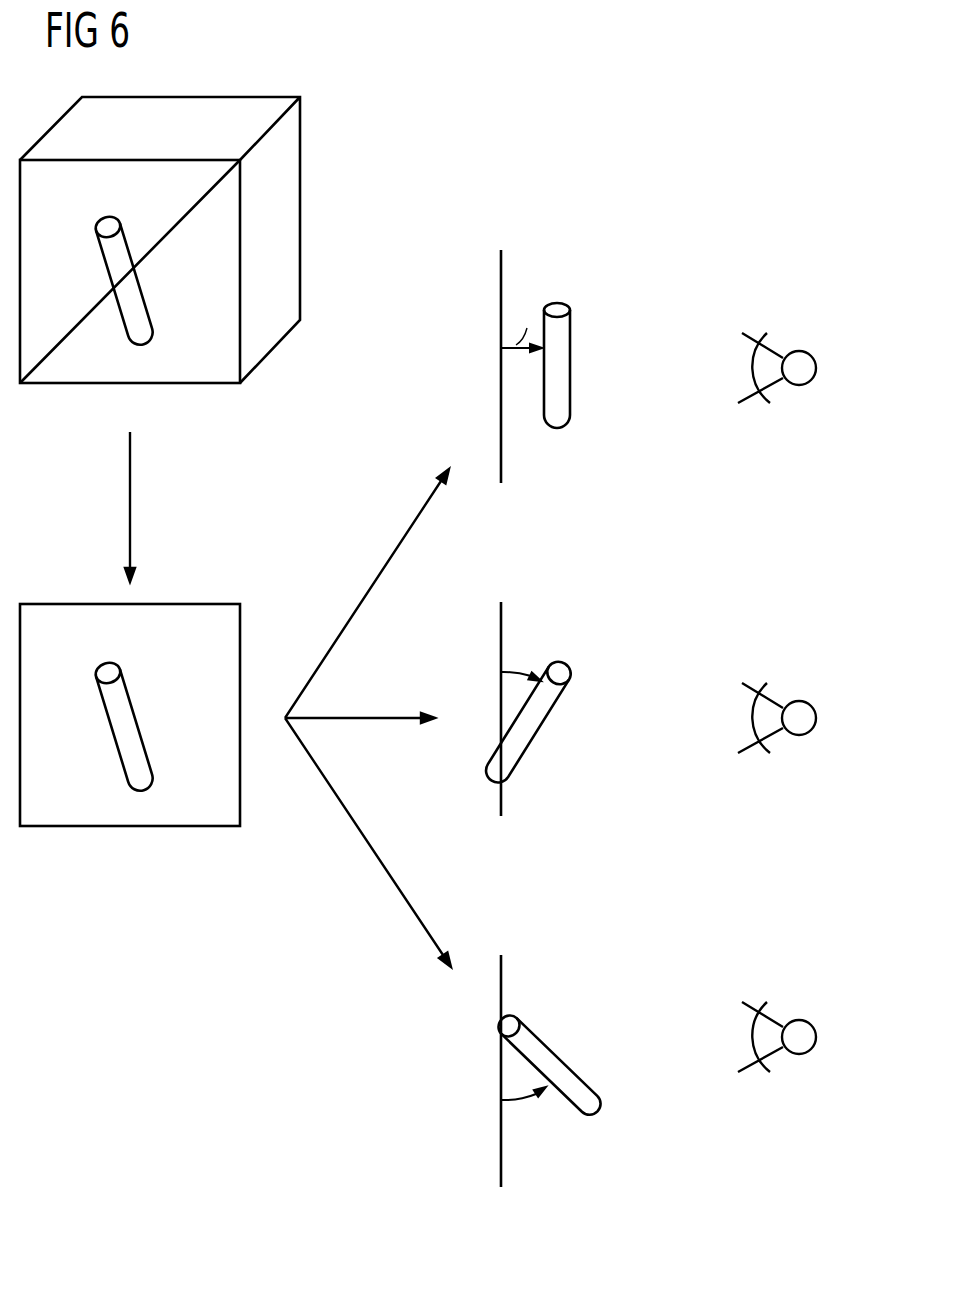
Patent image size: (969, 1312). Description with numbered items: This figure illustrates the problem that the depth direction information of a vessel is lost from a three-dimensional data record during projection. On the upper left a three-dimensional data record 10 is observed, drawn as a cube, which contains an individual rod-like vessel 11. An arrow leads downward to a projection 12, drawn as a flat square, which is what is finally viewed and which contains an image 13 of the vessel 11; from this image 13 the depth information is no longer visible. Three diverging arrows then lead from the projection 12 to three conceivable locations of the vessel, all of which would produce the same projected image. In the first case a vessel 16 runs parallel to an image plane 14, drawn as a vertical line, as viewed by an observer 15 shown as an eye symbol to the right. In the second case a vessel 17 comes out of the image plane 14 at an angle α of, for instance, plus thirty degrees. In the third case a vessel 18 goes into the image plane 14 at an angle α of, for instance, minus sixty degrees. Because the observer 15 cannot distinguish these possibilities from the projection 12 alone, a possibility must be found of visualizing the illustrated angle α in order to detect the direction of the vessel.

The 3D data record 10 is at (276, 238).
The rod-like vessel 11 is at (127, 310).
The projection 12 is at (190, 604).
The image of the vessel 13 is at (127, 735).
The image plane 14 is at (500, 288).
The observer 15 is at (797, 352).
The vessel 16 is at (567, 368).
The vessel 17 is at (540, 720).
The vessel 18 is at (548, 1057).